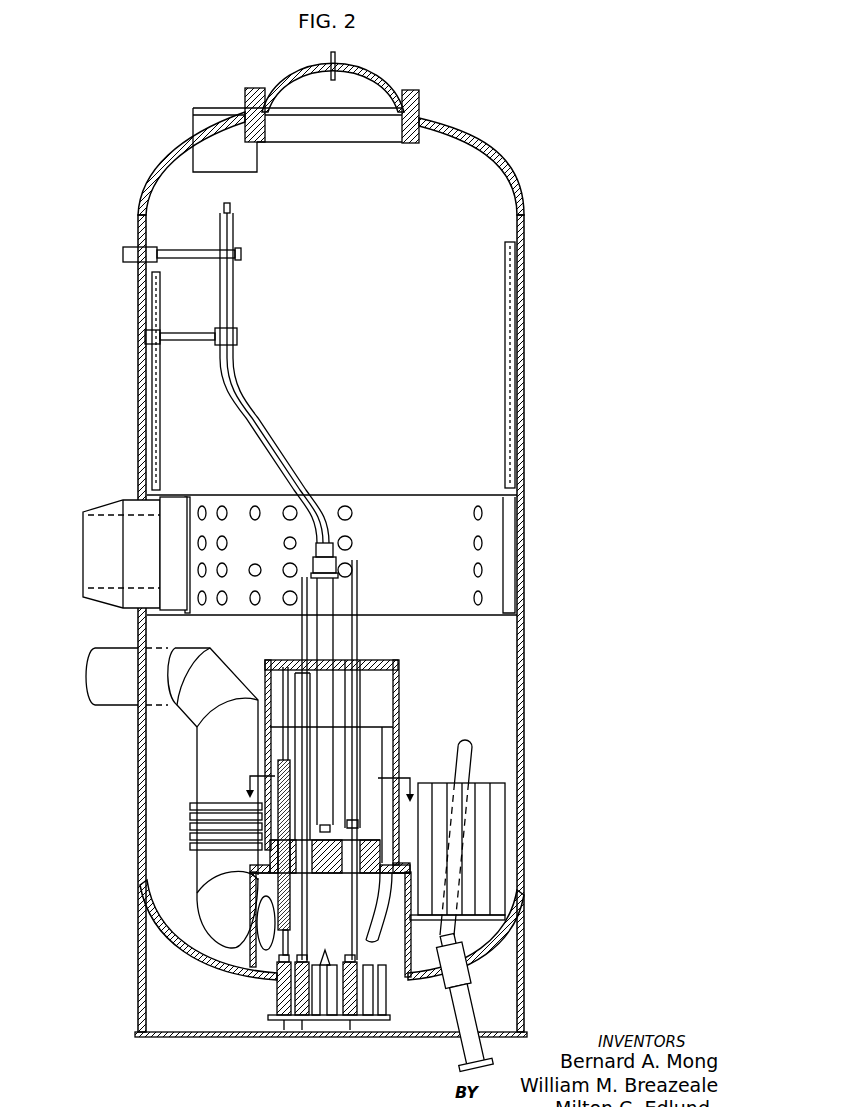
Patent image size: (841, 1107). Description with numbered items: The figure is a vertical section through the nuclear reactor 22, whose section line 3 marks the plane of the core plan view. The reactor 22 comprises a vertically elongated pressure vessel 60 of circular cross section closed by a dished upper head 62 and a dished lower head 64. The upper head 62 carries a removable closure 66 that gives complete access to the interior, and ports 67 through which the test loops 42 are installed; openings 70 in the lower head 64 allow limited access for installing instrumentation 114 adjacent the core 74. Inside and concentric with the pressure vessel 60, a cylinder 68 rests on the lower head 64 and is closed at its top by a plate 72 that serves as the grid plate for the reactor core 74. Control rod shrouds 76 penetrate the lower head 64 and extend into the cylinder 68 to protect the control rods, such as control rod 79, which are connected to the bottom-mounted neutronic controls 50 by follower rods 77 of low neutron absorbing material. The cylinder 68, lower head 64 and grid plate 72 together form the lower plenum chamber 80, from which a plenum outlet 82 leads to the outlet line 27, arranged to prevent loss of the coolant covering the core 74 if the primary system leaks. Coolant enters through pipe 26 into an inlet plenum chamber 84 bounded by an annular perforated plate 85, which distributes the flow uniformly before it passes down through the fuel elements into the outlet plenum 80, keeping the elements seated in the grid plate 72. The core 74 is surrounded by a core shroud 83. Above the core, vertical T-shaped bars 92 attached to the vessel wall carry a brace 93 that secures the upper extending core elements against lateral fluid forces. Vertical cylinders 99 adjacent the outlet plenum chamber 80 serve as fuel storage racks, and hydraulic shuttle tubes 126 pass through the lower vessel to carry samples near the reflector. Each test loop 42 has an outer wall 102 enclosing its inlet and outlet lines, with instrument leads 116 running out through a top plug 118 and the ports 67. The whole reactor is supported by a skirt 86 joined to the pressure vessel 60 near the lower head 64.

The nuclear reactor 22 is at (355, 544).
The pipe 26 is at (102, 572).
The outlet line 27 is at (95, 675).
The test loops 42 is at (326, 643).
The neutronic controls 50 is at (317, 1032).
The pressure vessel 60 is at (521, 437).
The upper head 62 is at (441, 138).
The lower head 64 is at (476, 952).
The removable closure 66 is at (359, 77).
The ports 67 is at (240, 160).
The cylinder 68 is at (405, 930).
The openings 70 is at (440, 980).
The plate 72 is at (318, 872).
The reactor core 74 is at (372, 748).
The control rod shrouds 76 is at (325, 960).
The follower rods 77 is at (303, 800).
The control rod 79 is at (303, 693).
The lower plenum chamber 80 is at (338, 920).
The plenum outlet 82 is at (243, 777).
The core shroud 83 is at (395, 698).
The inlet plenum chamber 84 is at (332, 555).
The annular perforated plate 85 is at (272, 551).
The skirt 86 is at (523, 952).
The vertical T-shaped bars 92 is at (158, 376).
The brace 93 is at (178, 336).
The vertical cylinders 99 is at (483, 834).
The outer wall 102 is at (233, 350).
The instrumentation 114 is at (473, 748).
The leads 116 is at (232, 306).
The top plug 118 is at (330, 560).
The hydraulic shuttle tubes 126 is at (380, 781).
The section line 3- 3 is at (321, 800).